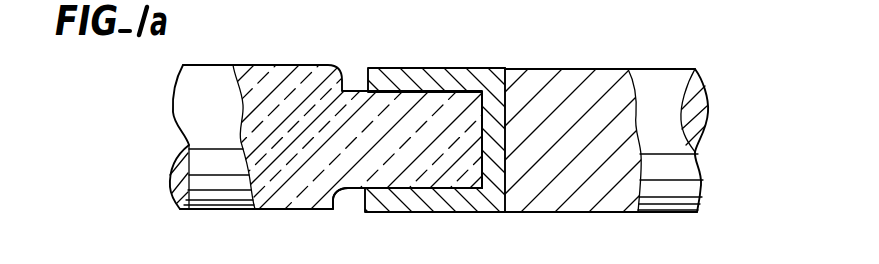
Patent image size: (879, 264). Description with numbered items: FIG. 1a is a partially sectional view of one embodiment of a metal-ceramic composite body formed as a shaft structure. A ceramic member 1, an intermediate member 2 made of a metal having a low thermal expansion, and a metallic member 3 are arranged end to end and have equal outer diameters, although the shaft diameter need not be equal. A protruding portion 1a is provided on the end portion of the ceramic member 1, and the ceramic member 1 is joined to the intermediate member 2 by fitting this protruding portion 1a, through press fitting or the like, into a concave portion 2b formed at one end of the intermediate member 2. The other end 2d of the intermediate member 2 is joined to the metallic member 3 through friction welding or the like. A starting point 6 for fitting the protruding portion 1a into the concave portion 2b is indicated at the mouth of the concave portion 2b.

The ceramic member 1 is at (282, 65).
The protruding portion 1a is at (475, 182).
The intermediate member 2 is at (445, 118).
The concave portion 2b is at (417, 96).
The other end 2d is at (508, 72).
The metallic member 3 is at (610, 82).
The starting point 6 is at (362, 190).